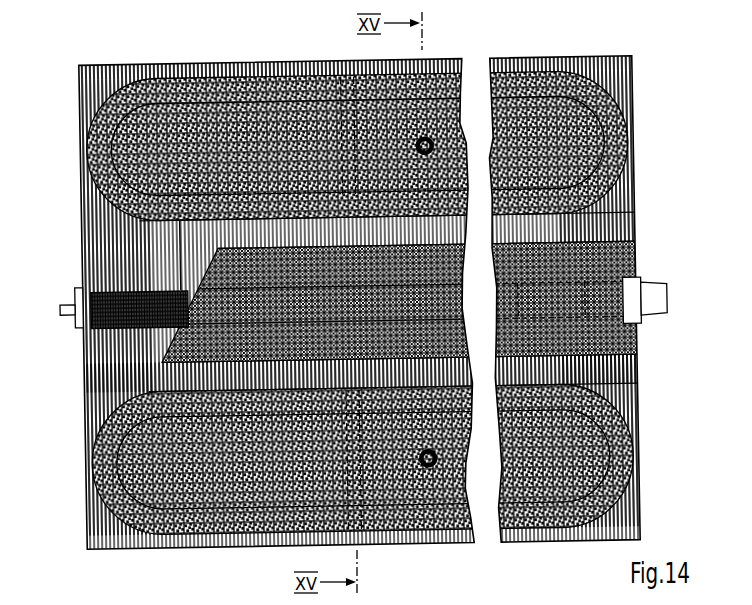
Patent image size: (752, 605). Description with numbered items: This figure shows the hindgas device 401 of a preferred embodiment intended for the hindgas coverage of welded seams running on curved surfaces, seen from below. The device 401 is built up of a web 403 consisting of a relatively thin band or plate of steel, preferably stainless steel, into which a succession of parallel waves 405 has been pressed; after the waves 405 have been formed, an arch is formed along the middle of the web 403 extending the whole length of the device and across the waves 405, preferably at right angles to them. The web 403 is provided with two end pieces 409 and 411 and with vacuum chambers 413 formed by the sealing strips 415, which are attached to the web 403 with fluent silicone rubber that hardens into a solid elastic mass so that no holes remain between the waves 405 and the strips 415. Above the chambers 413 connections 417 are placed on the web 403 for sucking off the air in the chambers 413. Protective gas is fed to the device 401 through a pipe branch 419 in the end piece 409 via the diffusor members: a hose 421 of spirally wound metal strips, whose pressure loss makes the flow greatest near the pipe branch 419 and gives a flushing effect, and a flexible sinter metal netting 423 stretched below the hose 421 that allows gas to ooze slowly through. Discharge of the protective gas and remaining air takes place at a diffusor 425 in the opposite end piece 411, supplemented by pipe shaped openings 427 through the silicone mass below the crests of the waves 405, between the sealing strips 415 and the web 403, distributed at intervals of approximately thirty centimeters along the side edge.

The hindgas device 401 is at (520, 49).
The web 403 is at (157, 65).
The waves 405 is at (167, 382).
The end piece 409 is at (80, 184).
The end piece 411 is at (637, 386).
The vacuum chambers 413 is at (228, 128).
The sealing strips 415 is at (272, 88).
The connections 417 is at (432, 140).
The pipe branch 419 is at (65, 300).
The diffusor member 421 is at (122, 318).
The sinter metal netting 423 is at (612, 250).
The diffusor 425 is at (657, 316).
The pipe shaped openings 427 is at (342, 62).